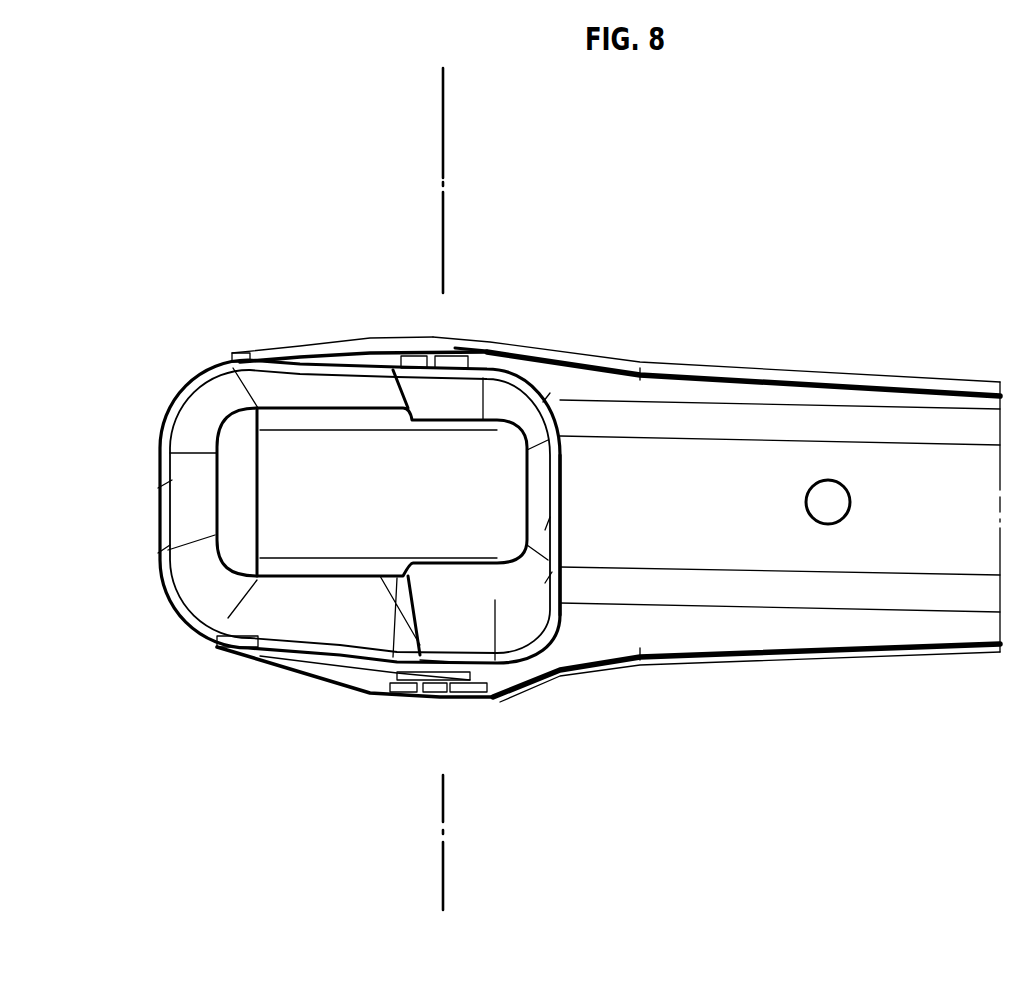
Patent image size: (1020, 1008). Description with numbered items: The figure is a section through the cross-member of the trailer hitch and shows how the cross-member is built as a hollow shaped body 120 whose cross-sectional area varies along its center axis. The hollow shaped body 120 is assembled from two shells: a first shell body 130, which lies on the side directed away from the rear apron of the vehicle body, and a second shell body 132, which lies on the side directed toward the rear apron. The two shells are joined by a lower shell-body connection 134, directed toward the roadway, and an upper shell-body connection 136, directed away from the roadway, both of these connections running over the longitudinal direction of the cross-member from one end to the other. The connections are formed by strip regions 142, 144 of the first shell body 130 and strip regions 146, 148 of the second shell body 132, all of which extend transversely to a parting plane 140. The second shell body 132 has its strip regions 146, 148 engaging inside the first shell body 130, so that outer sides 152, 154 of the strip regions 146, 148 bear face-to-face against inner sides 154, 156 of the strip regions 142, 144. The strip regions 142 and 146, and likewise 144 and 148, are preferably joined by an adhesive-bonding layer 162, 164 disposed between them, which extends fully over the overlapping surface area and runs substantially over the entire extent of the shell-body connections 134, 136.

The hollow shaped body 120 is at (587, 456).
The first shell body 130 is at (163, 497).
The second shell body 132 is at (558, 536).
The lower shell-body connection 134 is at (455, 700).
The upper shell-body connection 136 is at (443, 352).
The parting plane 140 is at (443, 105).
The strip region of the first shell body 142 is at (390, 697).
The strip region of the first shell body 144 is at (413, 353).
The strip region of the second shell body 146 is at (450, 658).
The strip region of the second shell body 148 is at (452, 355).
The outer side of strip region 152 is at (477, 700).
The outer side / inner side of strip region 154 is at (455, 348).
The inner side of strip region 156 is at (425, 357).
The adhesive-bonding layer 162 is at (443, 700).
The adhesive-bonding layer 164 is at (430, 353).